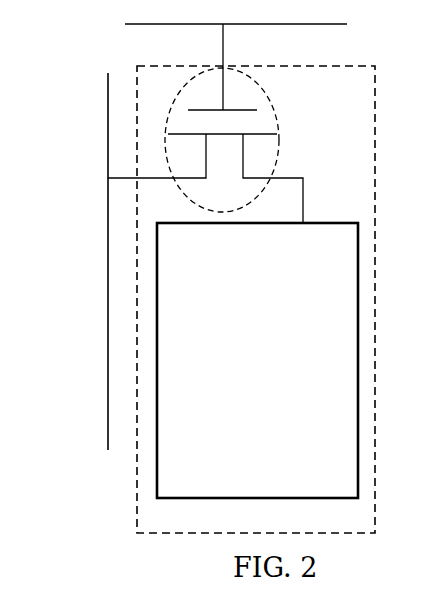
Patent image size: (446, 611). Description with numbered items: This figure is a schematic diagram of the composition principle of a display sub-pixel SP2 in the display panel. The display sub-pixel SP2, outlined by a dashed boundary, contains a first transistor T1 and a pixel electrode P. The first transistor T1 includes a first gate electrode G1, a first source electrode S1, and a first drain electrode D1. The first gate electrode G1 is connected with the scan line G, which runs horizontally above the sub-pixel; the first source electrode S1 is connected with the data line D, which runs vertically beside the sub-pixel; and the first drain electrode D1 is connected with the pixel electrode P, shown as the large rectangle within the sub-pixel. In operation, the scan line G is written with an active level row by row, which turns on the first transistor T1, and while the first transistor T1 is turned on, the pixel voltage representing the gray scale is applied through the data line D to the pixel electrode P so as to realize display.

The scan line G is at (249, 28).
The first gate electrode G1 is at (222, 67).
The first source electrode S1 is at (192, 156).
The first drain electrode D1 is at (273, 178).
The first transistor T1 is at (175, 110).
The data line D is at (112, 276).
The display sub-pixel SP2 is at (137, 307).
The pixel electrode P is at (257, 360).